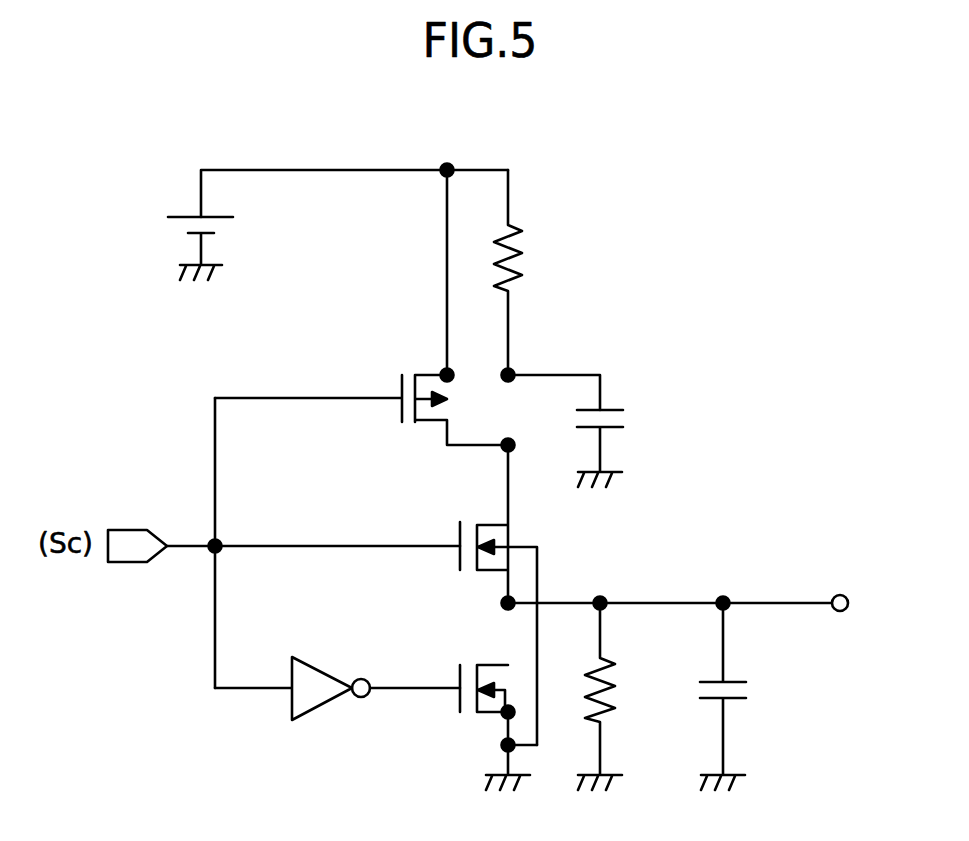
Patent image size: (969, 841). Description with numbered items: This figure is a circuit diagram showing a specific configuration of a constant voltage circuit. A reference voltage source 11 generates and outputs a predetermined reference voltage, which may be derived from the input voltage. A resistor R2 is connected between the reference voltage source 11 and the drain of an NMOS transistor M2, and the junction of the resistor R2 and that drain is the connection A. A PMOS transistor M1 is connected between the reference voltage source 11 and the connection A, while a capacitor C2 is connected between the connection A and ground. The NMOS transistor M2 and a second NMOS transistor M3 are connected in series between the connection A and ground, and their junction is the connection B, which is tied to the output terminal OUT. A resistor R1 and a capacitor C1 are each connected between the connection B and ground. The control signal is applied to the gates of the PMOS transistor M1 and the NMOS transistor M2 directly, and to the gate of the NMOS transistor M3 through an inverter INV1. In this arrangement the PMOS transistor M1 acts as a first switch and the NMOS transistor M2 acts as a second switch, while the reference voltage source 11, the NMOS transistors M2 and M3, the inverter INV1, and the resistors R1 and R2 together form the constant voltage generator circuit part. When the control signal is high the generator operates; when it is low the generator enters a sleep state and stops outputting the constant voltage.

The reference voltage source 11 is at (222, 226).
The resistor R2 is at (531, 272).
The capacitor C2 is at (622, 444).
The connection A is at (569, 374).
The PMOS transistor M1 is at (365, 396).
The NMOS transistor M2 is at (497, 595).
The NMOS transistor M3 is at (497, 711).
The inverter INV1 is at (337, 672).
The connection B is at (640, 600).
The output terminal OUT is at (841, 594).
The resistor R1 is at (620, 696).
The capacitor C1 is at (747, 696).